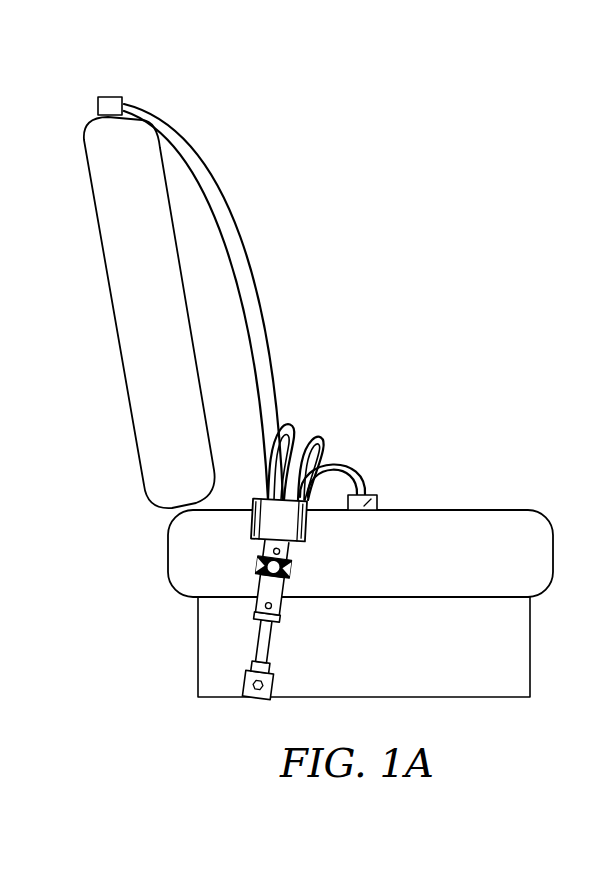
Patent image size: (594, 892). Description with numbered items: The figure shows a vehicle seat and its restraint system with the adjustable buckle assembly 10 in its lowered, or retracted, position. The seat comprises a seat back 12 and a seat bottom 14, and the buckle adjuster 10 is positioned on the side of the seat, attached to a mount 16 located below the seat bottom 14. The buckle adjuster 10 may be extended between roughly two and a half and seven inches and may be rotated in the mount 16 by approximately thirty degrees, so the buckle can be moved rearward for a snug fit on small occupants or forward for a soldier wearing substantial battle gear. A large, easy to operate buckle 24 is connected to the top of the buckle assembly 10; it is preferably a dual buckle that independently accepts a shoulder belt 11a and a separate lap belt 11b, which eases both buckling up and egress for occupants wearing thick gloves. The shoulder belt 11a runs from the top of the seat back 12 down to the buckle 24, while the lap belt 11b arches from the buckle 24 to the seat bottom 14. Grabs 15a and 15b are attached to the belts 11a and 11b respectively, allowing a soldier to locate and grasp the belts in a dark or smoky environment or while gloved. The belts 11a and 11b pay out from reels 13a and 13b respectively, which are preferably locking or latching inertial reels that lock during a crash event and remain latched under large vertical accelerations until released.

The adjustable buckle assembly 10 is at (318, 407).
The shoulder belt 11a is at (245, 288).
The lap belt 11b is at (360, 478).
The seat back 12 is at (143, 260).
The shoulder belt reel 13a is at (110, 110).
The lap belt reel 13b is at (367, 500).
The seat bottom 14 is at (497, 561).
The grab 15a is at (285, 425).
The grab 15b is at (323, 433).
The mount 16 is at (247, 678).
The buckle 24 is at (280, 517).